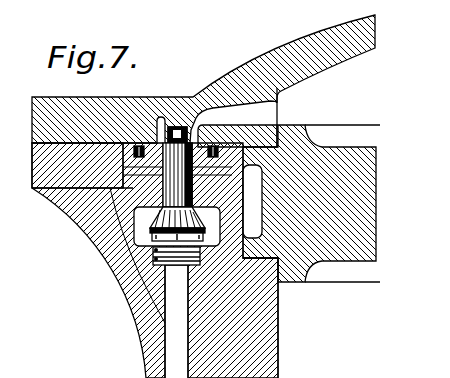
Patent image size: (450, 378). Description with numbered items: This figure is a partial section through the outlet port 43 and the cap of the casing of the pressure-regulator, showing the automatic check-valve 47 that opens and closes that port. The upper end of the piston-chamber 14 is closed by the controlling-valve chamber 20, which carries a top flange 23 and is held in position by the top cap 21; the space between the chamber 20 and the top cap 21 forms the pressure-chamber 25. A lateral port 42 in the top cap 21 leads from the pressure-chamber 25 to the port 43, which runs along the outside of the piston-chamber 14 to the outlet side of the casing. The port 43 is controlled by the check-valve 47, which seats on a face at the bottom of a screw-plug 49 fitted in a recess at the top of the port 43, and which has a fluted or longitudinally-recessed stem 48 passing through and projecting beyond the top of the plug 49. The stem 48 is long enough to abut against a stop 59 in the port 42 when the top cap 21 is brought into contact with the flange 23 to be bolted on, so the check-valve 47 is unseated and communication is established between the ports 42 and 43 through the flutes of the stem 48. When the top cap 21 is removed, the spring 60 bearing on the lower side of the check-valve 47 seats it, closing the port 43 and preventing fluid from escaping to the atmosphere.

The top cap 21 is at (203, 73).
The lateral port 42 is at (262, 115).
The stop 59 is at (177, 117).
The pressure-chamber 25 is at (342, 180).
The fluted valve-stem 48 is at (127, 167).
The screw-plug 49 is at (213, 191).
The controlling-valve chamber 20 is at (327, 203).
The top flange 23 is at (22, 166).
The automatic check-valve 47 is at (150, 216).
The spring 60 is at (153, 264).
The outlet port 43 is at (165, 323).
The piston-chamber 14 is at (281, 318).